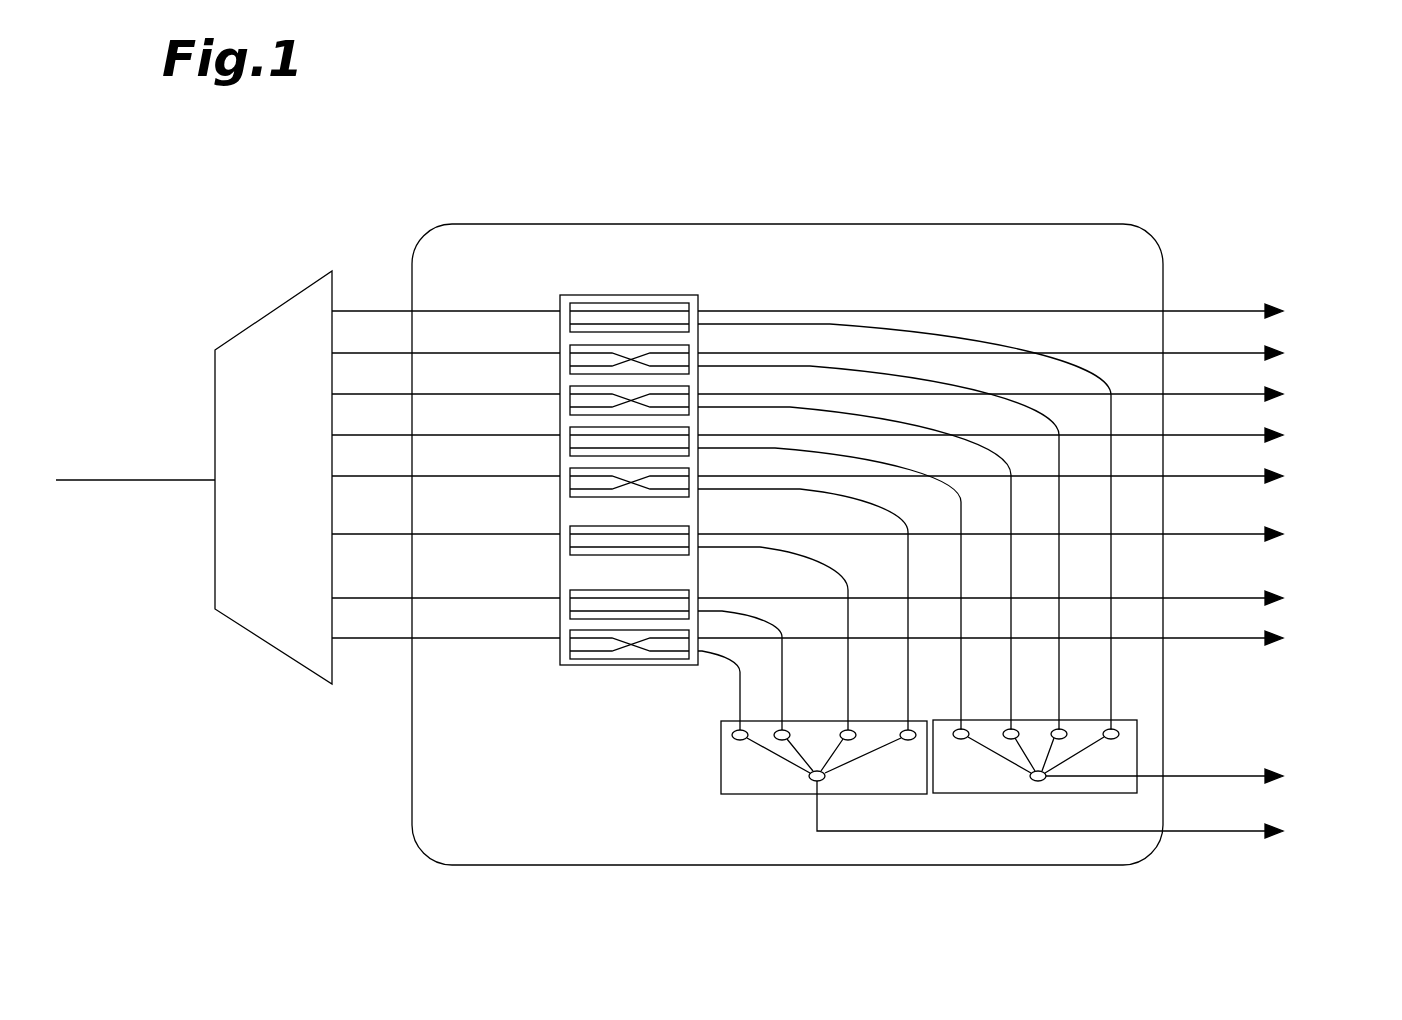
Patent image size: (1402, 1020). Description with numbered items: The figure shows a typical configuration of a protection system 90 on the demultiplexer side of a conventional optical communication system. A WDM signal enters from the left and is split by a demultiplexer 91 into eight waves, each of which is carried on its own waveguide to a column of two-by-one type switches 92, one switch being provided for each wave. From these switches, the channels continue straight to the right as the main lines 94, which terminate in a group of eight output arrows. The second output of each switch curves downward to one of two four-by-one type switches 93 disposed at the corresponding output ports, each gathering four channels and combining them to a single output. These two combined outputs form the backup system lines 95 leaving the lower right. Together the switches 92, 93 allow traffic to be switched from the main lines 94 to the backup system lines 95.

The protection system 90 is at (348, 222).
The demultiplexer 91 is at (270, 648).
The 2x1 type switches 92 is at (666, 296).
The 4x1 type switches 93 is at (1137, 742).
The main lines 94 is at (1302, 295).
The backup system lines 95 is at (1306, 763).